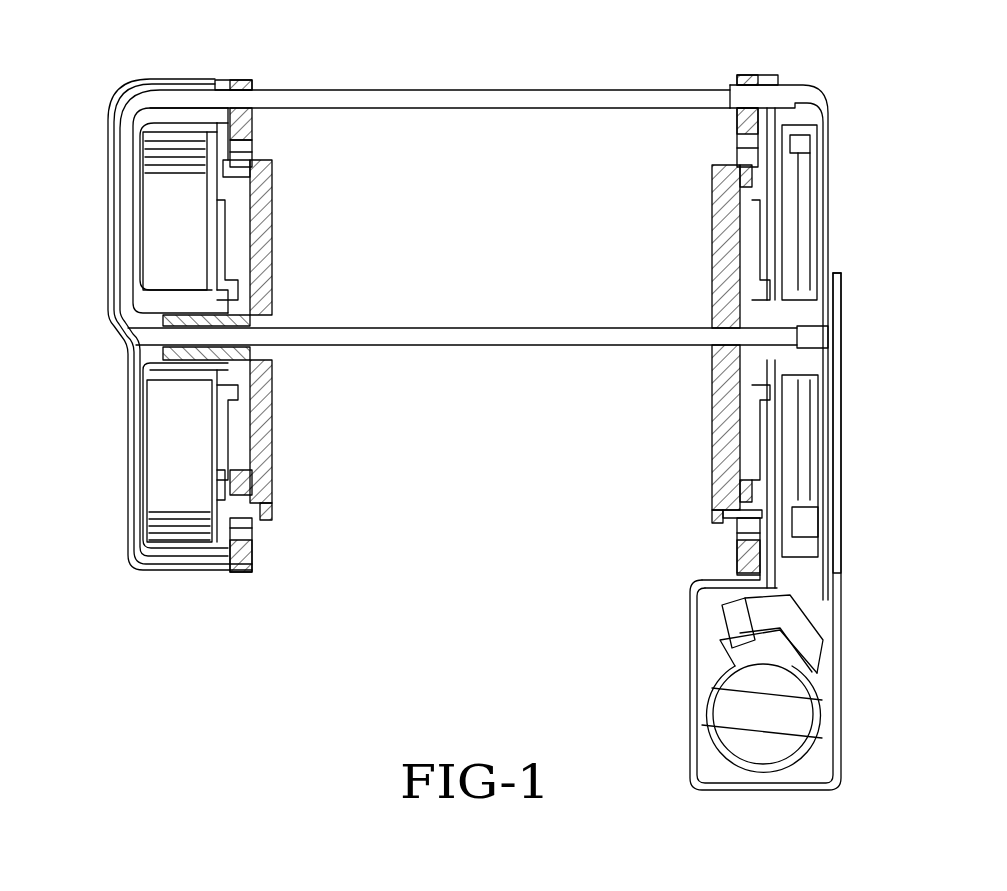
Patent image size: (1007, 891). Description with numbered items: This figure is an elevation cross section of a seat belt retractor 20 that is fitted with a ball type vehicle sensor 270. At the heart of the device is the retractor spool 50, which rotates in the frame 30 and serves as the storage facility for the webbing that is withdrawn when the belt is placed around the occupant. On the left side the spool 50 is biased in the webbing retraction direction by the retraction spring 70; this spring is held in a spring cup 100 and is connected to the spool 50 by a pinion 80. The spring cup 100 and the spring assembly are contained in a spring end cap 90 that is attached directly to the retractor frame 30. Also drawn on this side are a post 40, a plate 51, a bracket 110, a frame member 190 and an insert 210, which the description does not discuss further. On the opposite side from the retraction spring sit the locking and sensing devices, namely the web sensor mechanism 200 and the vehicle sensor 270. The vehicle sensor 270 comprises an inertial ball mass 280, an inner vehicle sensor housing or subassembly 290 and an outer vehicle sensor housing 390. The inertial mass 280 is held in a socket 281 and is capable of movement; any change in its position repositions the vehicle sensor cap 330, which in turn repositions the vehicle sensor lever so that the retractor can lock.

The seat belt retractor 20 is at (473, 90).
The frame 30 is at (242, 574).
The bolt 40 is at (246, 148).
The retractor spool 50 is at (536, 425).
The end plate 51 is at (268, 478).
The retraction spring 70 is at (168, 525).
The pinion 80 is at (180, 355).
The spring end cap 90 is at (117, 110).
The spring cup 100 is at (108, 258).
The bracket 110 is at (770, 548).
The frame 190 is at (810, 137).
The web sensor mechanism 200 is at (827, 188).
The insert 210 is at (803, 265).
The vehicle sensor 270 is at (820, 668).
The inertial ball mass 280 is at (782, 743).
The socket 281 is at (743, 765).
The inner vehicle sensor housing 290 is at (831, 728).
The vehicle sensor cap 330 is at (715, 682).
The outer vehicle sensor housing 390 is at (688, 636).